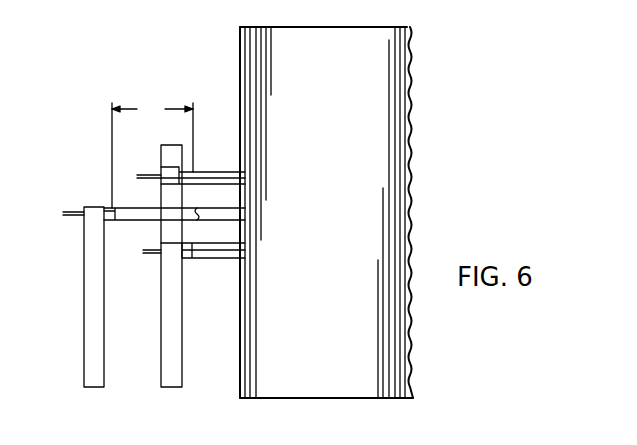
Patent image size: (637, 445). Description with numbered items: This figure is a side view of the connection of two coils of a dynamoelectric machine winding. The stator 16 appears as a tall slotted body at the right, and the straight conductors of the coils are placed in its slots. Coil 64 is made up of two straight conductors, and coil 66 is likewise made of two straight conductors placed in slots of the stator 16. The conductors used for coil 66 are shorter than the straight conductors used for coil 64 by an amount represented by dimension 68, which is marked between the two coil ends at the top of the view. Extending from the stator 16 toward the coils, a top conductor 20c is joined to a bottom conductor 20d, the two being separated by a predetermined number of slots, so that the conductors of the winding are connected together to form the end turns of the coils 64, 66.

The stator 16 is at (373, 26).
The top conductor 20c is at (237, 214).
The bottom conductor 20d is at (220, 172).
The coil 64 is at (96, 328).
The coil 66 is at (176, 328).
The dimension 68 is at (152, 155).